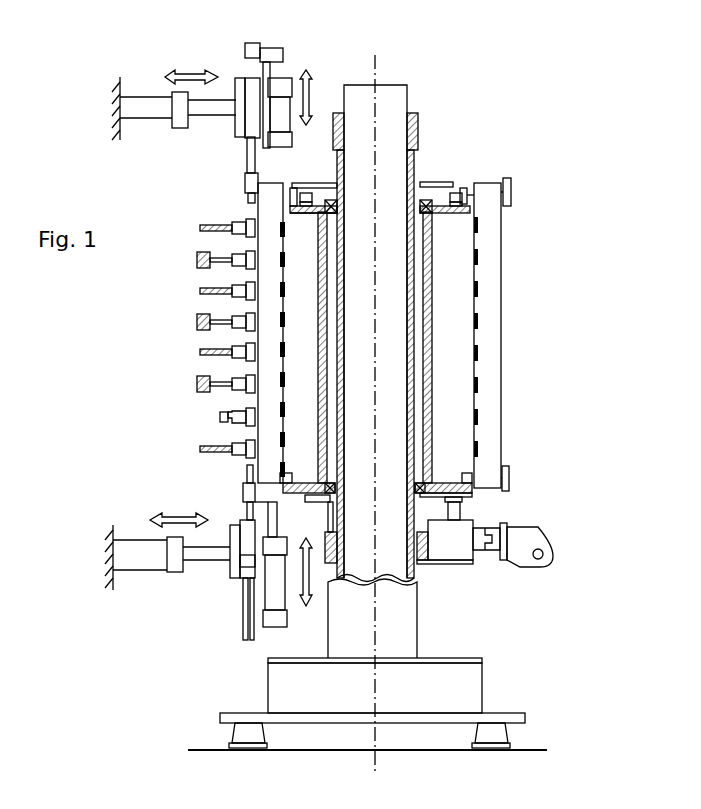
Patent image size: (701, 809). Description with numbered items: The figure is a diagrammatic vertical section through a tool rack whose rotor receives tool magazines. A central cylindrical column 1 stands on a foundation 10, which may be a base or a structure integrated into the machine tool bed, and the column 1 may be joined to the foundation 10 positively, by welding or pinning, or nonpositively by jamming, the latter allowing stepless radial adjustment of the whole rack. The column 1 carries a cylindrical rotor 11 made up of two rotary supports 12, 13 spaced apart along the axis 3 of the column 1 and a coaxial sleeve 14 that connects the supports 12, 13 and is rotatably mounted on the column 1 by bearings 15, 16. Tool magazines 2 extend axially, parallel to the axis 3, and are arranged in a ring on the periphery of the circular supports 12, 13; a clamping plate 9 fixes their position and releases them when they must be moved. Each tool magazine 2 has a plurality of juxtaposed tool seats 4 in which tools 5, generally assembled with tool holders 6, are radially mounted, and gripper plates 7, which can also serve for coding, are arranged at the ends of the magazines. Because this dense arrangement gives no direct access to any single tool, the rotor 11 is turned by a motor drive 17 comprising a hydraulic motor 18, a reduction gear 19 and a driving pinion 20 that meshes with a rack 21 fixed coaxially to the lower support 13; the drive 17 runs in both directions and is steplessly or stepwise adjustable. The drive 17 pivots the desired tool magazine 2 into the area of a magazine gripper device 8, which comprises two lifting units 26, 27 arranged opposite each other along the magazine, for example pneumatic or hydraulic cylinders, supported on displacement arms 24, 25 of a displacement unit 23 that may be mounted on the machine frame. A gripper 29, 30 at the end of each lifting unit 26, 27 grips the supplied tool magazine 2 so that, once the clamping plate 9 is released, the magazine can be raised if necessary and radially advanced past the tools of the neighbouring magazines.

The central cylindrical column 1 is at (405, 612).
The tool magazine 2 is at (268, 272).
The axis of column 3 is at (383, 72).
The tool seat 4 is at (490, 296).
The tool 5 is at (240, 291).
The tool holder 6 is at (235, 352).
The gripper plate 7 is at (511, 190).
The magazine gripper device 8 is at (225, 148).
The clamping plate 9 is at (310, 184).
The foundation 10 is at (495, 688).
The cylindrical rotor 11 is at (458, 142).
The rotary support 12 is at (437, 222).
The rotary support 13 is at (300, 470).
The coaxial sleeve 14 is at (434, 345).
The bearing 15 is at (428, 207).
The bearing 16 is at (440, 483).
The motor drive 17 is at (490, 568).
The hydraulic motor 18 is at (542, 540).
The reduction gear 19 is at (450, 540).
The driving pinion 20 is at (462, 499).
The rack 21 is at (322, 508).
The displacement unit 23 is at (188, 322).
The displacement arm 24 is at (180, 130).
The displacement arm 25 is at (178, 570).
The lifting unit 26 is at (293, 70).
The lifting unit 27 is at (232, 612).
The gripper 29 is at (247, 497).
The gripper 30 is at (248, 186).